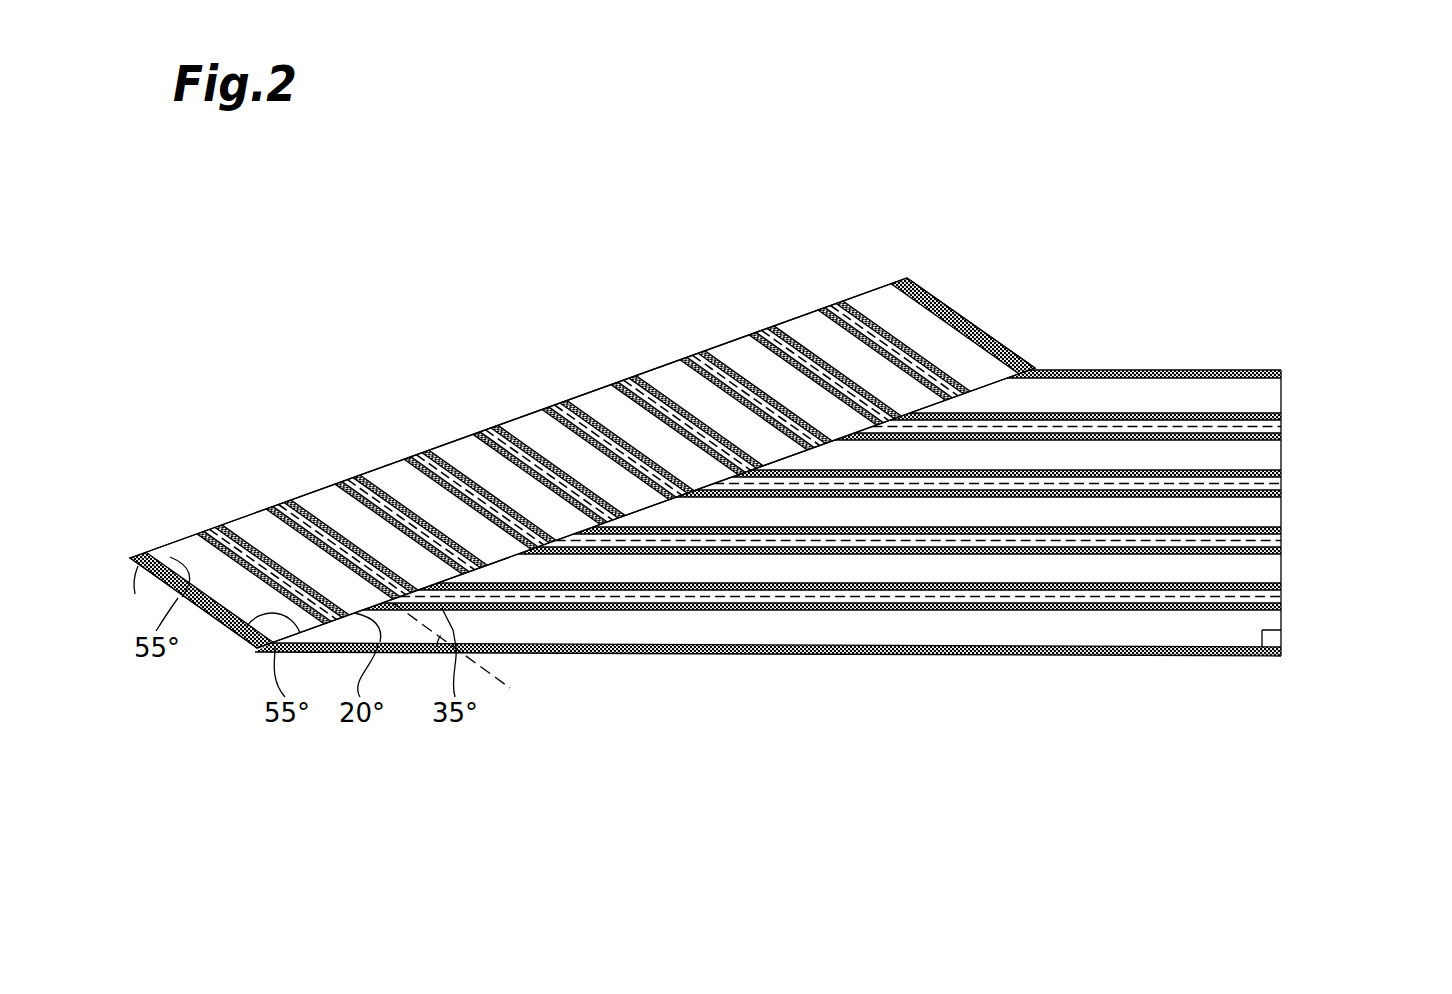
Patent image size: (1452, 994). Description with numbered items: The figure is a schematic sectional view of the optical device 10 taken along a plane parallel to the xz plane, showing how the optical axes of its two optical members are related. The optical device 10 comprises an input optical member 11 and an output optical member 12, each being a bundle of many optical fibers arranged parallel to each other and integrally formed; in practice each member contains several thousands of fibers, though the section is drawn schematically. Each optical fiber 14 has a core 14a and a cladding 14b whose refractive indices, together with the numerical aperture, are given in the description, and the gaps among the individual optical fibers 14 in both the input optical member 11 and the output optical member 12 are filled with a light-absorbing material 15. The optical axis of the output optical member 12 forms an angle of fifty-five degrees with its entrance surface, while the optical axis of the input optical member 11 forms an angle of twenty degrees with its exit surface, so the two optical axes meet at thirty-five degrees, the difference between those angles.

The optical device 10 is at (787, 464).
The input optical member 11 is at (850, 550).
The output optical member 12 is at (728, 340).
The optical fiber 14 is at (904, 505).
The core 14a is at (1272, 455).
The cladding 14b is at (1031, 496).
The light-absorbing material 15 is at (1278, 487).